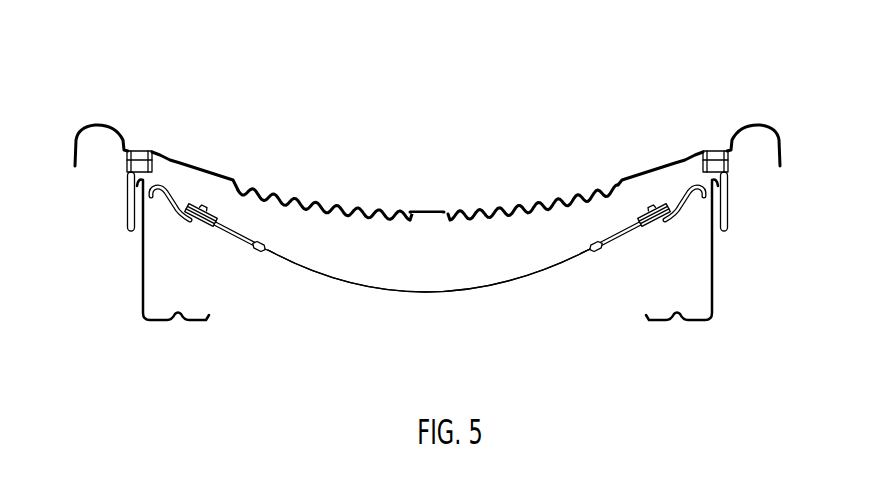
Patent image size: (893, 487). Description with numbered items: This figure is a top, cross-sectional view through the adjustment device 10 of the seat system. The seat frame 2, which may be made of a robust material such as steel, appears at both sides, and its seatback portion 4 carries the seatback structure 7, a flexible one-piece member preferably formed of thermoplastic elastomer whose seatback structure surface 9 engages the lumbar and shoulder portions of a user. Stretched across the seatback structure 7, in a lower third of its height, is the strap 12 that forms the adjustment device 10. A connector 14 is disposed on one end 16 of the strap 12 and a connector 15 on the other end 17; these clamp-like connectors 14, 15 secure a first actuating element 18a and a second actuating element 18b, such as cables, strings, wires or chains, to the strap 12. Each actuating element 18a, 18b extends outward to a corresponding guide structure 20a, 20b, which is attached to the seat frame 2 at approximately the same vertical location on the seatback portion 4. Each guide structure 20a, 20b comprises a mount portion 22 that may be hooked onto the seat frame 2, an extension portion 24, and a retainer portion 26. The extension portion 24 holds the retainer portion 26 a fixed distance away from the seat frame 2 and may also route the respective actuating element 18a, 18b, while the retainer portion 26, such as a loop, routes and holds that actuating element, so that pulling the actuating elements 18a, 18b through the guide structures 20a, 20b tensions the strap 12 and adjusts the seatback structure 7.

The seat frame 2 is at (126, 184).
The seatback portion 4 is at (730, 184).
The seatback structure 7 is at (78, 89).
The seatback structure surface 9 is at (426, 208).
The adjustment device 10 is at (376, 292).
The strap 12 is at (503, 285).
The connector 14 is at (259, 253).
The connector 15 is at (594, 255).
The end 16 is at (273, 255).
The end 17 is at (579, 257).
The first actuating element 18a is at (227, 234).
The second actuating element 18b is at (623, 237).
The guide structure 20a is at (200, 204).
The guide structure 20b is at (648, 199).
The mount portion 22 is at (153, 203).
The extension portion 24 is at (181, 218).
The retainer portion 26 is at (193, 206).